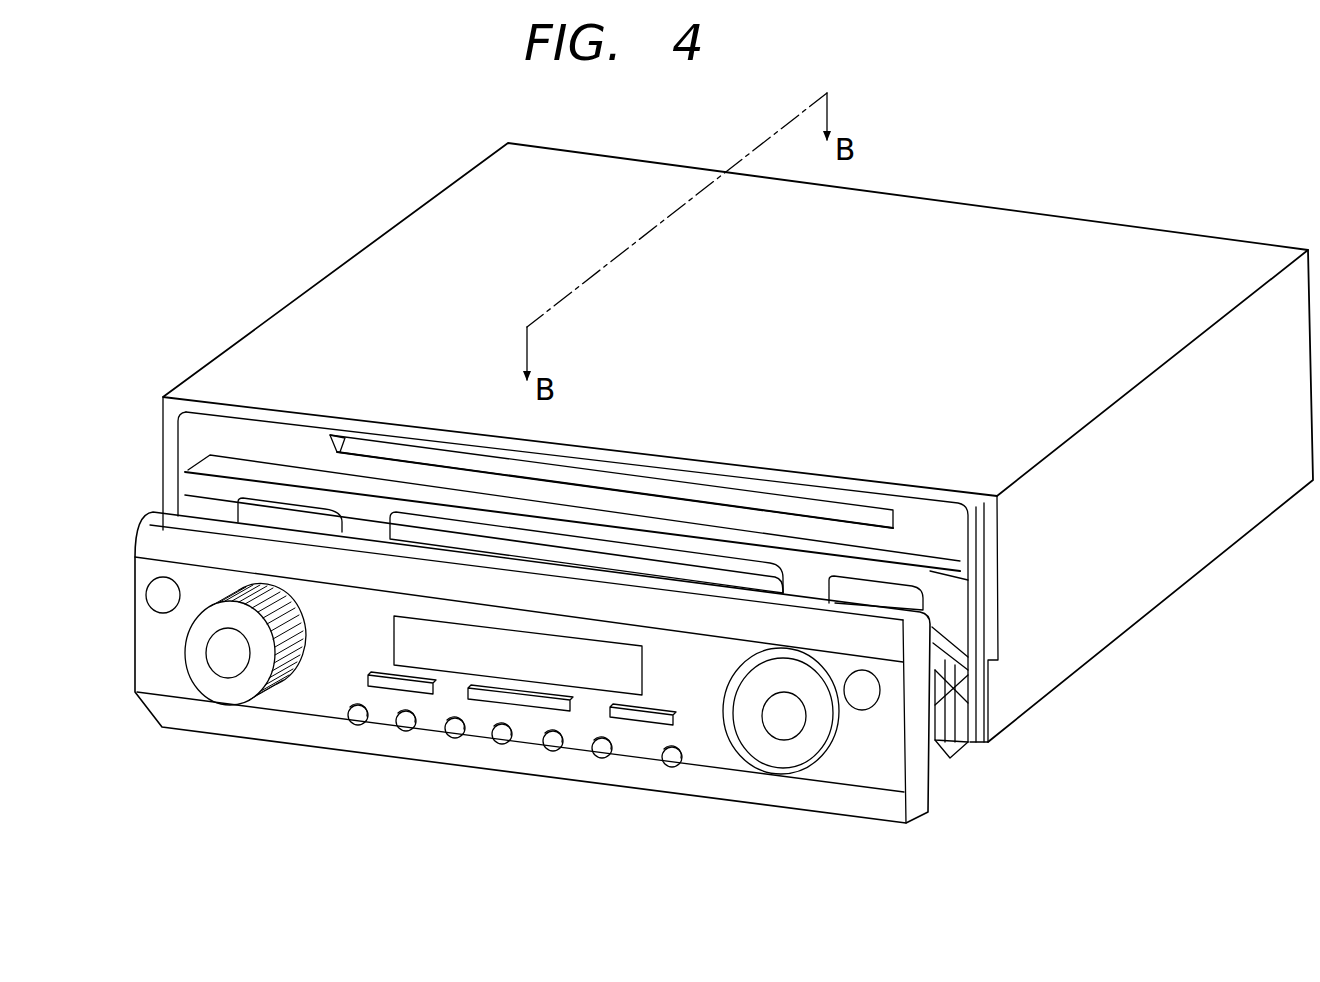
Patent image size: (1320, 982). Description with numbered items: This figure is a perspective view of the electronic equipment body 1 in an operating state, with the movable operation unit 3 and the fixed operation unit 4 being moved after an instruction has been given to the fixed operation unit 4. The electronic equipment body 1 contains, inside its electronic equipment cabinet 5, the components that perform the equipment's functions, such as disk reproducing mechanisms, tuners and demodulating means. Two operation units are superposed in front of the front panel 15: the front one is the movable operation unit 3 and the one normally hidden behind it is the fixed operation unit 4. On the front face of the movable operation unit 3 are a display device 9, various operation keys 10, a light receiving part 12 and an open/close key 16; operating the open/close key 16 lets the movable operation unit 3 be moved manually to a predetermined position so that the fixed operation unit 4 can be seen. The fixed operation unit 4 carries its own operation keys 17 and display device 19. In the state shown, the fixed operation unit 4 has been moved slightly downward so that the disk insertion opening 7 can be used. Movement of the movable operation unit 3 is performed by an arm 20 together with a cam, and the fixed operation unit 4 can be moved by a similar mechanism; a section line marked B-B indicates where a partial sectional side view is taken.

The electronic equipment body 1 is at (930, 174).
The movable operation unit 3 is at (674, 800).
The fixed operation unit 4 is at (918, 544).
The electronic equipment cabinet 5 is at (1075, 237).
The disk insertion opening 7 is at (445, 437).
The display device 9 is at (594, 666).
The operation keys 10 is at (248, 686).
The light receiving part 12 is at (147, 597).
The front panel 15 is at (997, 547).
The open/close key 16 is at (862, 702).
The operation keys 17 is at (245, 500).
The display device 19 is at (733, 565).
The arm 20 is at (962, 717).